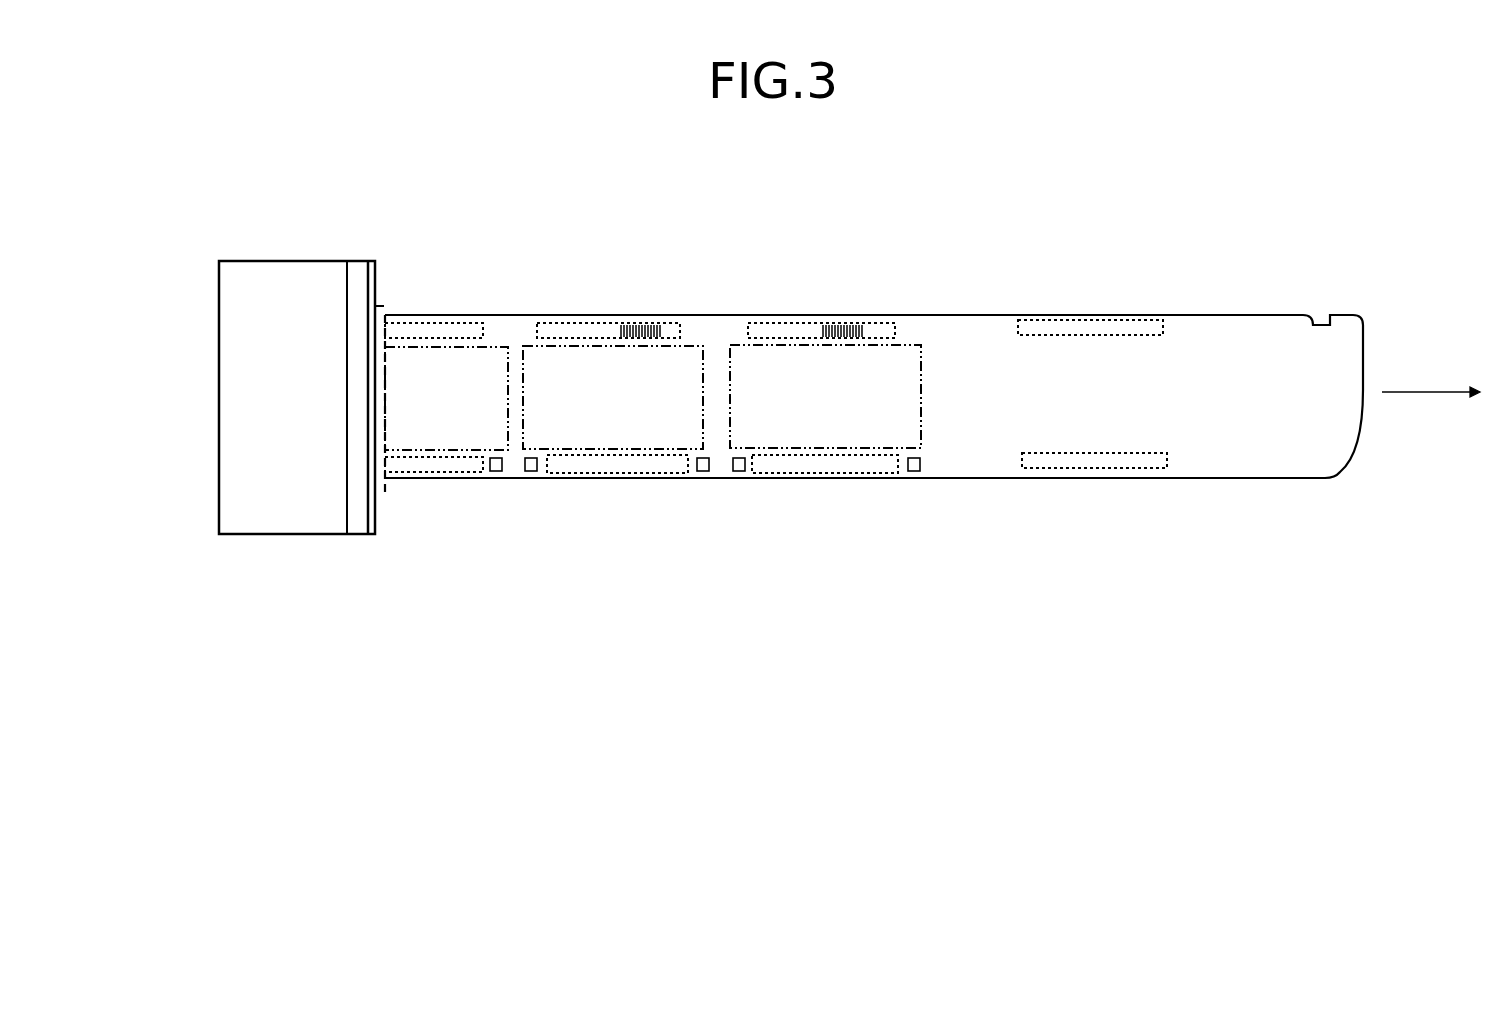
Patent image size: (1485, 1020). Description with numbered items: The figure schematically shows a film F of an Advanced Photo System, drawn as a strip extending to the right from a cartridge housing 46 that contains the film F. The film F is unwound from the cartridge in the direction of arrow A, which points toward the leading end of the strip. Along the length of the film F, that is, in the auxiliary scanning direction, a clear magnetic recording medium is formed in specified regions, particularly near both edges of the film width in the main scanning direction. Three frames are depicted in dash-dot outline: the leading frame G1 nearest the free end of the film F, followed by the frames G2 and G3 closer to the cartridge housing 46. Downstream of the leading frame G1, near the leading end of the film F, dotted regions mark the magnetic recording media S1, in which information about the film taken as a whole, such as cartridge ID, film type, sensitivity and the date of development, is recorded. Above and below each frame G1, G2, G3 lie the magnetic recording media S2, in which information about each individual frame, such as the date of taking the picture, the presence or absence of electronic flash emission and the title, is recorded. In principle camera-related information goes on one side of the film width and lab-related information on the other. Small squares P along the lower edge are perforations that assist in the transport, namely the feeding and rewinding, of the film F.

The cartridge housing 46 is at (322, 305).
The film F is at (1227, 420).
The arrow indicating film unwinding direction A is at (1431, 375).
The magnetic recording media near the leading end S1 is at (1057, 310).
The magnetic recording media in frame regions S2 is at (398, 317).
The leading frame G1 is at (888, 378).
The frame G2 is at (673, 383).
The frame G3 is at (468, 382).
The perforations P is at (493, 471).